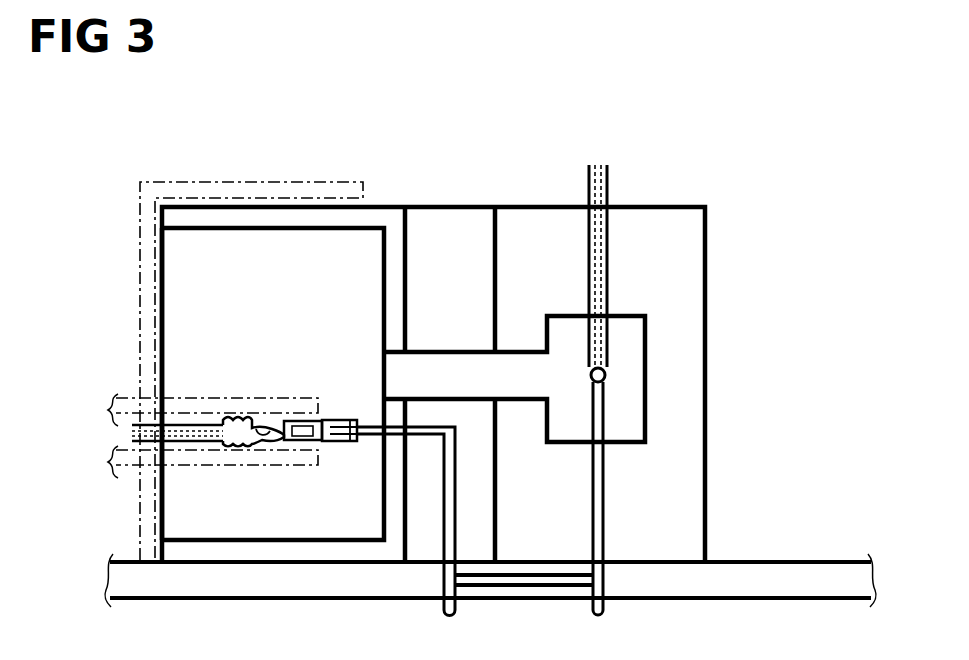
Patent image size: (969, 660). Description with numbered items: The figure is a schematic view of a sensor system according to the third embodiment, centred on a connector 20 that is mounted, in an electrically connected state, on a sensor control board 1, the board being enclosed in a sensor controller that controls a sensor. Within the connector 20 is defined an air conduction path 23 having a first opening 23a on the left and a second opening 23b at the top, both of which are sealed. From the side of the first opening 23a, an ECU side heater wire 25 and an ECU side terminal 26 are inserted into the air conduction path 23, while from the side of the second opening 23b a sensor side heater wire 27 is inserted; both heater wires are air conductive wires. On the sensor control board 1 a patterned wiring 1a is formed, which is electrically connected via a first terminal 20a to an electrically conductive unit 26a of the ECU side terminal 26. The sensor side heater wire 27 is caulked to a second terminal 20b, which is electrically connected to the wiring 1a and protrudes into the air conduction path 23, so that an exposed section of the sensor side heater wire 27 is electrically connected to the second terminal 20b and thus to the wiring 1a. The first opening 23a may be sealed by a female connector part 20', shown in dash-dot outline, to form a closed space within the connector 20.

The sensor control board 1 is at (769, 561).
The wiring 1a is at (559, 586).
The connector 20 is at (480, 384).
The female connector part 20' is at (251, 355).
The first terminal 20a is at (442, 516).
The second terminal 20b is at (604, 511).
The air conduction path 23 is at (443, 356).
The first opening 23a is at (162, 312).
The second opening 23b is at (607, 206).
The ECU side heater wire 25 is at (172, 425).
The ECU side terminal 26 is at (274, 443).
The electrically conductive unit 26a is at (330, 421).
The sensor side heater wire 27 is at (589, 183).